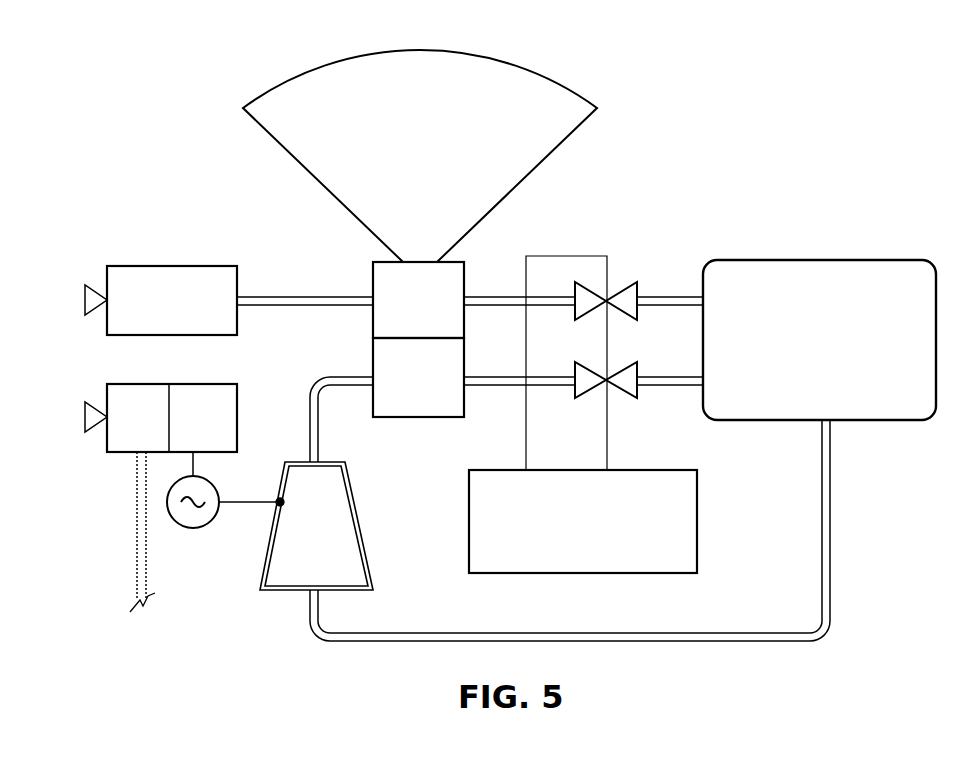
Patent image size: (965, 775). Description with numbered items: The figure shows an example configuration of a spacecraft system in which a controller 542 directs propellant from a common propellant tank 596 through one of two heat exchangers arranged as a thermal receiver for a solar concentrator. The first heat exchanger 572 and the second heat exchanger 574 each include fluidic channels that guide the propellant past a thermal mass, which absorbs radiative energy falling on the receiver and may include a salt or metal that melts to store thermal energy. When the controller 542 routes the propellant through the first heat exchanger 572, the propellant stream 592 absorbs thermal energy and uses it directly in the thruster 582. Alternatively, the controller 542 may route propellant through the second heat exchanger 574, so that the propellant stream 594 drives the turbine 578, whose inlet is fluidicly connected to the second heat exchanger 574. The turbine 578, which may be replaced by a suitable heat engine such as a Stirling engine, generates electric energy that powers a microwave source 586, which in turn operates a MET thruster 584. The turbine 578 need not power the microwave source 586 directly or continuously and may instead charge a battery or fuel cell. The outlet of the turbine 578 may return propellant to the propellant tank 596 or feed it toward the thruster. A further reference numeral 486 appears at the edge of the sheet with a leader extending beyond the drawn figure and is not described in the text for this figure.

The component (off-sheet) 486 is at (153, 0).
The first heat exchanger 572 is at (448, 50).
The second heat exchanger 574 is at (373, 372).
The thruster 582 is at (122, 266).
The MET thruster 584 is at (110, 384).
The microwave source 586 is at (187, 528).
The turbine 578 is at (353, 518).
The propellant stream 592 is at (608, 298).
The propellant stream 594 is at (610, 385).
The propellant tank 596 is at (808, 260).
The controller 542 is at (595, 573).